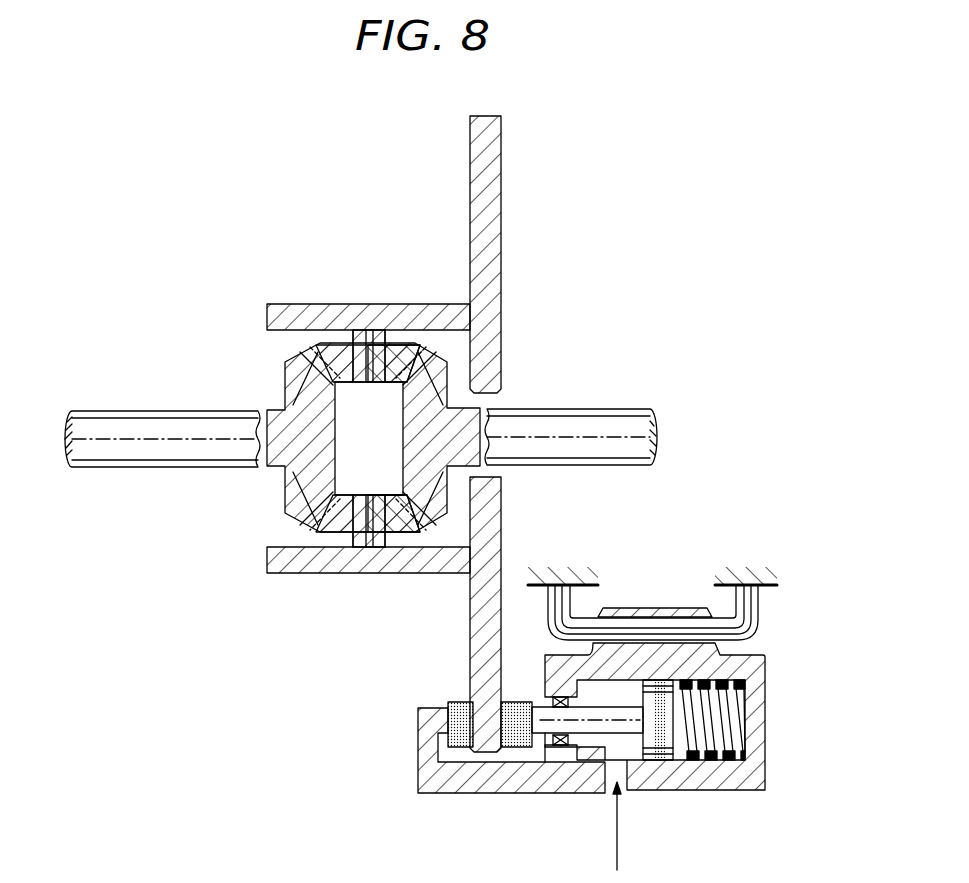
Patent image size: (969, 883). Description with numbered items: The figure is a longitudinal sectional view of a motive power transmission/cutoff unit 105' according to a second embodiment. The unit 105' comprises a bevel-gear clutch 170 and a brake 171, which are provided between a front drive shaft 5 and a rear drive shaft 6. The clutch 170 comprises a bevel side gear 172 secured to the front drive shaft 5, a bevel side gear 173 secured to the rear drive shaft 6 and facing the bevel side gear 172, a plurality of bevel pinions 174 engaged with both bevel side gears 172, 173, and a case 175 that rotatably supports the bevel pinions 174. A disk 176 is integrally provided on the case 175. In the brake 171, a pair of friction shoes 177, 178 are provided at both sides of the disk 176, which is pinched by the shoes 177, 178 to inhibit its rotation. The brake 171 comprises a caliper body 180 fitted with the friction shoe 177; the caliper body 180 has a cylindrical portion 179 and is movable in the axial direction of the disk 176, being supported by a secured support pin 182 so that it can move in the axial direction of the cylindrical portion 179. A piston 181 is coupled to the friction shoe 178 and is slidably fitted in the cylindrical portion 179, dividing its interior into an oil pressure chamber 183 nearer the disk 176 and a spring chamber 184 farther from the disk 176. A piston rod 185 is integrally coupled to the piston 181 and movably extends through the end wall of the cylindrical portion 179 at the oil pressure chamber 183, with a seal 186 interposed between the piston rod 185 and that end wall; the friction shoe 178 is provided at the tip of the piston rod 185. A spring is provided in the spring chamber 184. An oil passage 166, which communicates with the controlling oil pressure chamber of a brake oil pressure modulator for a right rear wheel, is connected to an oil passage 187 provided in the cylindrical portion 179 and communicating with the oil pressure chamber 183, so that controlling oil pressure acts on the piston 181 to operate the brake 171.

The front drive shaft 5 is at (121, 411).
The rear drive shaft 6 is at (598, 409).
The motive power transmission/cutoff unit 105' is at (492, 456).
The oil passage 166 is at (617, 860).
The bevel-gear clutch 170 is at (365, 580).
The brake 171 is at (412, 730).
The bevel side gear 172 is at (288, 497).
The bevel side gear 173 is at (446, 388).
The bevel pinions 174 is at (333, 527).
The case 175 is at (412, 304).
The disk 176 is at (501, 170).
The friction shoe 177 is at (456, 702).
The friction shoe 178 is at (516, 702).
The cylindrical portion 179 is at (722, 772).
The caliper body 180 is at (487, 787).
The piston 181 is at (677, 712).
The support pin 182 is at (652, 620).
The oil pressure chamber 183 is at (592, 760).
The spring chamber 184 is at (735, 740).
The piston rod 185 is at (658, 752).
The seal 186 is at (745, 692).
The oil passage 187 is at (620, 778).